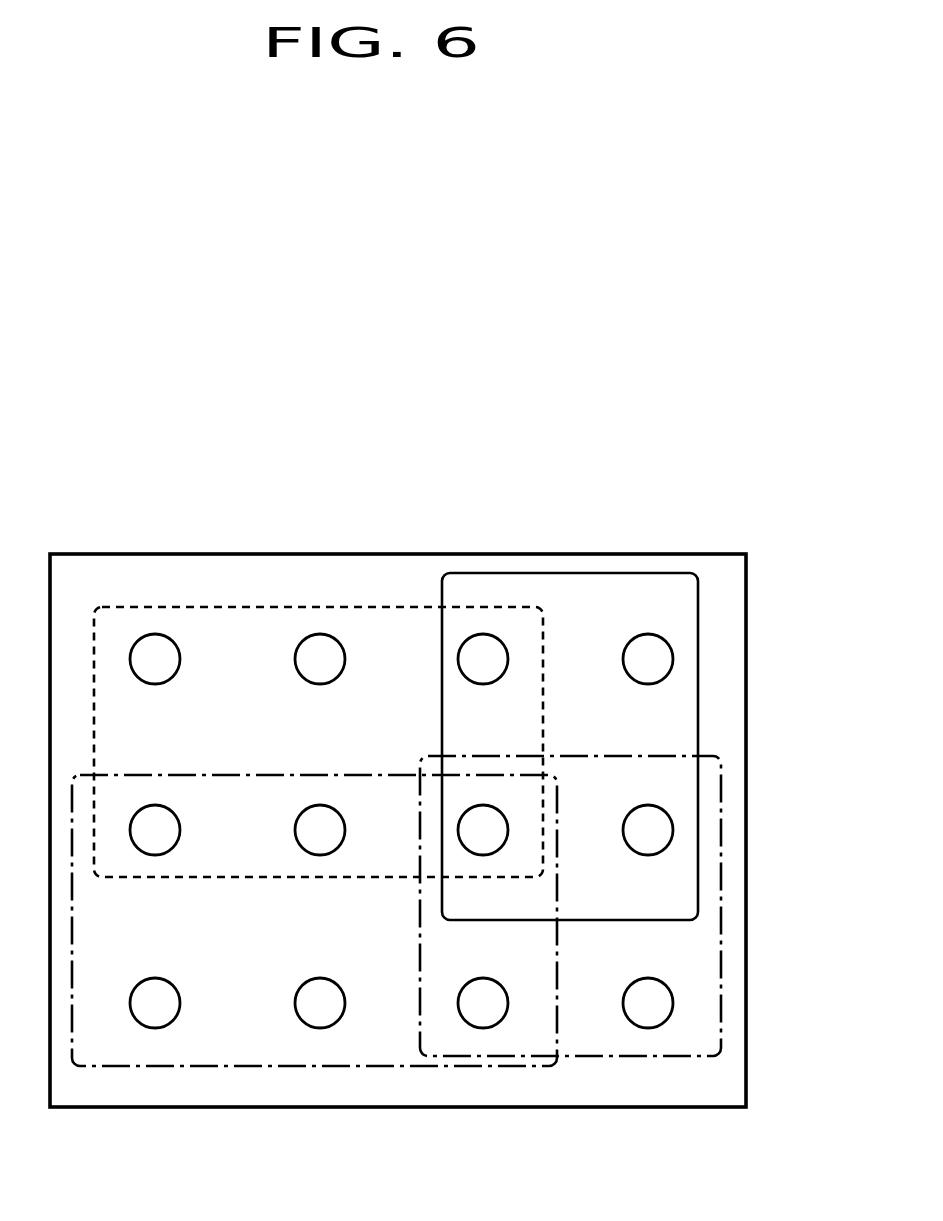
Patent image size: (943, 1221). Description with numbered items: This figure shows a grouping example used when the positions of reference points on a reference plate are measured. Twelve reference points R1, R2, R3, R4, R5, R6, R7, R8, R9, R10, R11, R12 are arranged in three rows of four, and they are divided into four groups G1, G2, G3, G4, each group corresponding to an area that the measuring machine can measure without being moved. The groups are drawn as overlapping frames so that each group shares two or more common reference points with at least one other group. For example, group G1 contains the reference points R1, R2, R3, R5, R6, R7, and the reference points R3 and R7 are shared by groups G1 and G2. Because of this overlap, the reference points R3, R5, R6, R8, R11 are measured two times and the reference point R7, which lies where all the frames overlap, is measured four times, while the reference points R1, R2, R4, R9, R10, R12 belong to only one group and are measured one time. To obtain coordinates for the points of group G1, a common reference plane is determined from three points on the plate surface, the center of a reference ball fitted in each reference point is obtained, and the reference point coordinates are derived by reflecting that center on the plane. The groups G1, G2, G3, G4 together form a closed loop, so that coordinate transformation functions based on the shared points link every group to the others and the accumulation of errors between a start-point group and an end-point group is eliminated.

The reference point R1 is at (177, 1007).
The reference point R2 is at (342, 1008).
The reference point R3 is at (502, 1000).
The reference point R4 is at (635, 995).
The reference point R5 is at (158, 848).
The reference point R6 is at (322, 848).
The reference point R7 is at (480, 845).
The reference point R8 is at (652, 847).
The reference point R9 is at (168, 675).
The reference point R10 is at (322, 676).
The reference point R11 is at (485, 672).
The reference point R12 is at (632, 668).
The group G1 is at (205, 1066).
The group G2 is at (607, 1056).
The group G3 is at (698, 690).
The group G4 is at (212, 607).